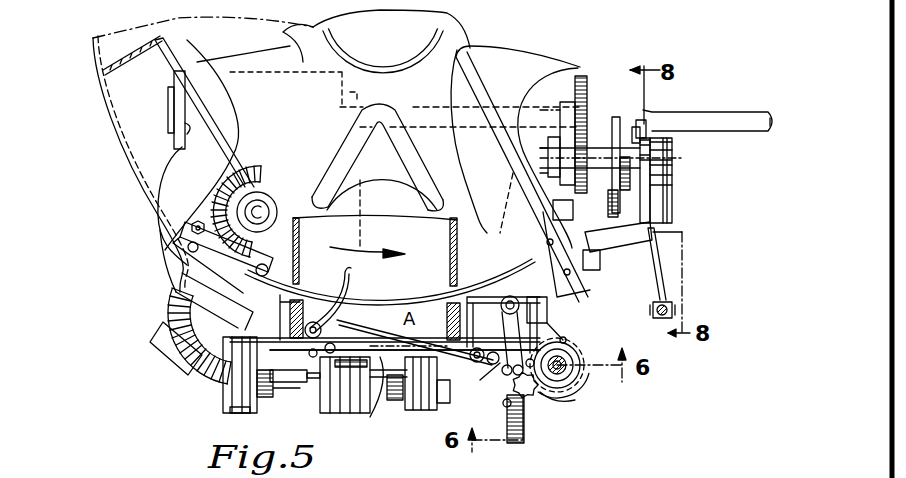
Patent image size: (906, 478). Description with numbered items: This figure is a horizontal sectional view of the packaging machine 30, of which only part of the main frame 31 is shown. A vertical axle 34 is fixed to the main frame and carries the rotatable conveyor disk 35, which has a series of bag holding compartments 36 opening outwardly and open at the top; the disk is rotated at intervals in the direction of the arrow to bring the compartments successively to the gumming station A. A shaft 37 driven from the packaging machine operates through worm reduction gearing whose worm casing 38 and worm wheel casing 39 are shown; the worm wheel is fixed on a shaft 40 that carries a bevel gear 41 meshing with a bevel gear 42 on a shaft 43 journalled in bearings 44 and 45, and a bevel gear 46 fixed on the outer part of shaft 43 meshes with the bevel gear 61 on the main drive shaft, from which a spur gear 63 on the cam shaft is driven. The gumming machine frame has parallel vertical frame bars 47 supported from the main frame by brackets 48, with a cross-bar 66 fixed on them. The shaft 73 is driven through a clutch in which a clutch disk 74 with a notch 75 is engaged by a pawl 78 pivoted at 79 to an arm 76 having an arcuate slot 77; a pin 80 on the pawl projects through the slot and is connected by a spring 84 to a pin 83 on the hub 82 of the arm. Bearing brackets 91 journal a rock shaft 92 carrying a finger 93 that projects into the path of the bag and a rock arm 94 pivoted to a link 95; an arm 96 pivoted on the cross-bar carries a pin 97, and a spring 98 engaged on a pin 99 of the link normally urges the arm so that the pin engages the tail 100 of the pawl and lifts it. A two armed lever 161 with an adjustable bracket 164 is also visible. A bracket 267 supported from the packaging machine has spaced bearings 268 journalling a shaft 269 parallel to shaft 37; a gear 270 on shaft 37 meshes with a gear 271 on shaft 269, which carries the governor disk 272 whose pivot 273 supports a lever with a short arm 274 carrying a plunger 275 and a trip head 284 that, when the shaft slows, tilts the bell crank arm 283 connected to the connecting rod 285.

The packaging machine 30 is at (106, 145).
The main frame 31 is at (187, 275).
The vertical axle 34 is at (417, 25).
The conveyor disk 35 is at (463, 227).
The package or bag holding compartments 36 is at (437, 230).
The shaft 37 is at (727, 98).
The worm casing 38 is at (188, 100).
The worm wheel casing 39 is at (173, 190).
The shaft 40 is at (258, 207).
The bevel gear 41 is at (250, 162).
The bevel gear 42 is at (186, 226).
The shaft 43 is at (212, 277).
The bearing 44 is at (170, 347).
The bearing 45 is at (200, 258).
The bevel gear 46 is at (180, 308).
The frame bars 47 is at (325, 292).
The brackets 48 is at (297, 281).
The bevel gear 61 is at (207, 375).
The spur gear 63 is at (520, 443).
The cross-bar 66 is at (233, 387).
The shaft 73 is at (577, 355).
The clutch disk 74 is at (580, 376).
The notch 75 is at (547, 330).
The arm 76 is at (550, 393).
The arcuate slot 77 is at (538, 395).
The pawl 78 is at (500, 363).
The pivot 79 is at (527, 420).
The pin 80 is at (507, 403).
The hub 82 is at (573, 383).
The pin 83 is at (563, 340).
The spring 84 is at (553, 407).
The bearing brackets 91 is at (300, 345).
The rock shaft 92 is at (307, 370).
The finger 93 is at (346, 287).
The rock arm 94 is at (320, 378).
The link or connecting rod 95 is at (387, 390).
The arm 96 is at (493, 353).
The pin 97 is at (457, 395).
The spring 98 is at (353, 330).
The pin 99 is at (343, 317).
The tail of the pawl 100 is at (510, 303).
The two armed lever 161 is at (327, 395).
The bracket 164 is at (345, 400).
The bracket 267 is at (612, 253).
The bearings 268 is at (543, 157).
The shaft 269 is at (680, 175).
The gear 270 is at (589, 86).
The gear 271 is at (570, 163).
The governor disk 272 is at (640, 118).
The pivot 273 is at (672, 143).
The short arm 274 is at (643, 128).
The plunger 275 is at (672, 155).
The horizontal arm 283 is at (660, 268).
The trip head 284 is at (690, 103).
The connecting rod 285 is at (672, 302).